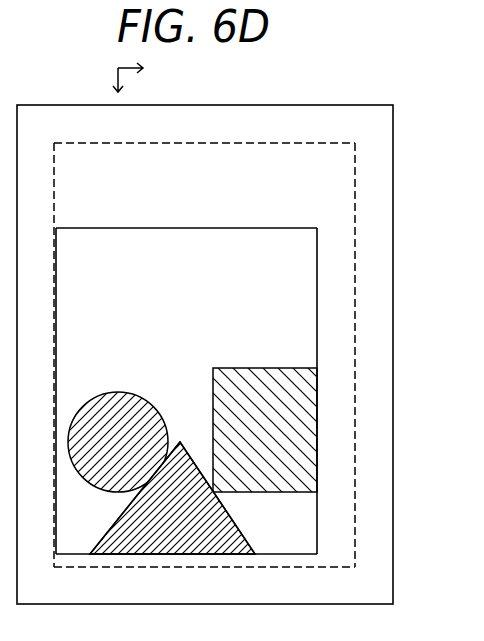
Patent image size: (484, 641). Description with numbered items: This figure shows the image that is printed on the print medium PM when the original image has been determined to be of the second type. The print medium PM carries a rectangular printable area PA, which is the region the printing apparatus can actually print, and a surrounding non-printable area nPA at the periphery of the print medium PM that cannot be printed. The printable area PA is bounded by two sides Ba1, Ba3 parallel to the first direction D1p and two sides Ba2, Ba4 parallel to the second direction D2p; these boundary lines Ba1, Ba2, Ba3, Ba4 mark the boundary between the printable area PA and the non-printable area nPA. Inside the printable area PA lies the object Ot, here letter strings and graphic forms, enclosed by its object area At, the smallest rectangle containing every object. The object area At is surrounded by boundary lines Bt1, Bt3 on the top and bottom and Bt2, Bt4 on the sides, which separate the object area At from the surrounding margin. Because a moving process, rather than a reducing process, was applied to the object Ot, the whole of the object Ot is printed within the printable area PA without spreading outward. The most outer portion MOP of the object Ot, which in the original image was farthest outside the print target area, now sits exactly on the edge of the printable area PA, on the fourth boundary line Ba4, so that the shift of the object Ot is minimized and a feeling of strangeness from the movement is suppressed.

The print medium PM is at (331, 105).
The non-printable area nPA is at (218, 116).
The printable area PA is at (209, 357).
The first boundary line Ba1 is at (218, 143).
The second boundary line Ba2 is at (355, 370).
The third boundary line Ba3 is at (218, 568).
The fourth boundary line Ba4 is at (55, 204).
The most outer portion MOP is at (176, 368).
The first boundary line Bt1 is at (222, 229).
The second boundary line Bt2 is at (316, 330).
The third boundary line Bt3 is at (280, 553).
The fourth boundary line Bt4 is at (56, 543).
The object Ot is at (189, 368).
The object area At is at (303, 240).
The first direction D1p is at (150, 68).
The second direction D2p is at (92, 80).